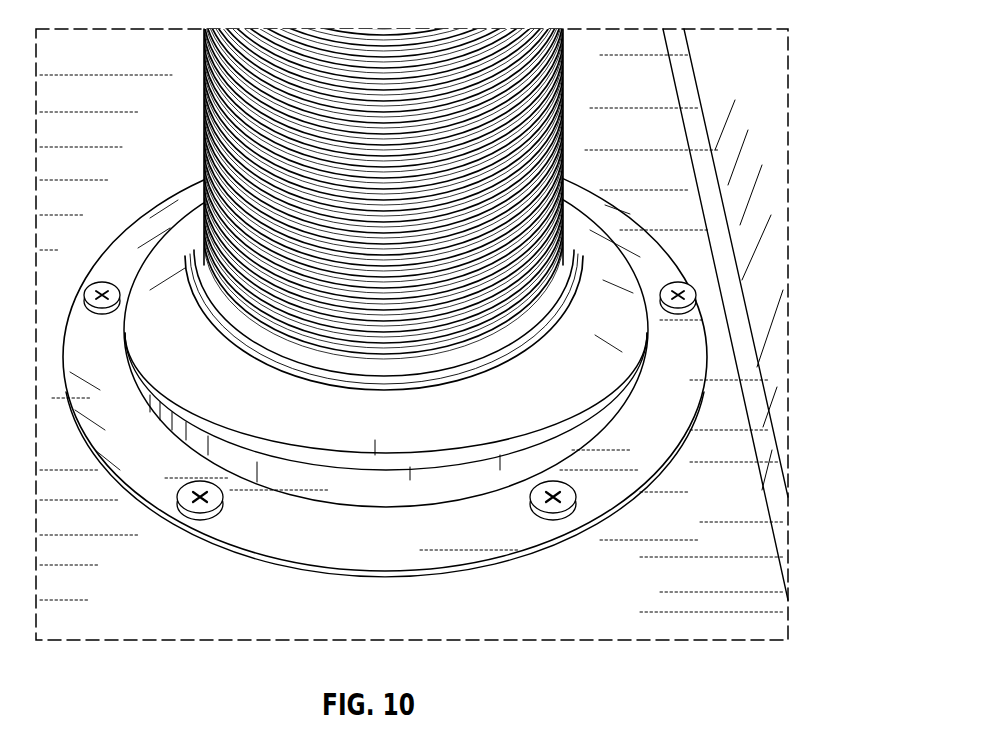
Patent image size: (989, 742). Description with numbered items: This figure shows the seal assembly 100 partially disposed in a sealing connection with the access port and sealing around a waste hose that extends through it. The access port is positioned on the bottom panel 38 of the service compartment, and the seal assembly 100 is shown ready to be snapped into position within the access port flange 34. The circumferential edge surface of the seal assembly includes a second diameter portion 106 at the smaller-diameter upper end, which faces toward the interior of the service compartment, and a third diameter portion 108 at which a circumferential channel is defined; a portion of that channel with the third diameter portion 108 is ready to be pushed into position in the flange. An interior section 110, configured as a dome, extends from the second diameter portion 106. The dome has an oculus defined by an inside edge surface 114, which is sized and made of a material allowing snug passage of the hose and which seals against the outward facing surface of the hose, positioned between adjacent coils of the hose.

The access port flange 34 is at (335, 547).
The bottom panel 38 is at (661, 559).
The seal assembly 100 is at (623, 307).
The second diameter portion 106 is at (608, 386).
The third diameter portion 108 is at (370, 487).
The interior section 110 is at (241, 402).
The inside edge surface 114 is at (605, 199).